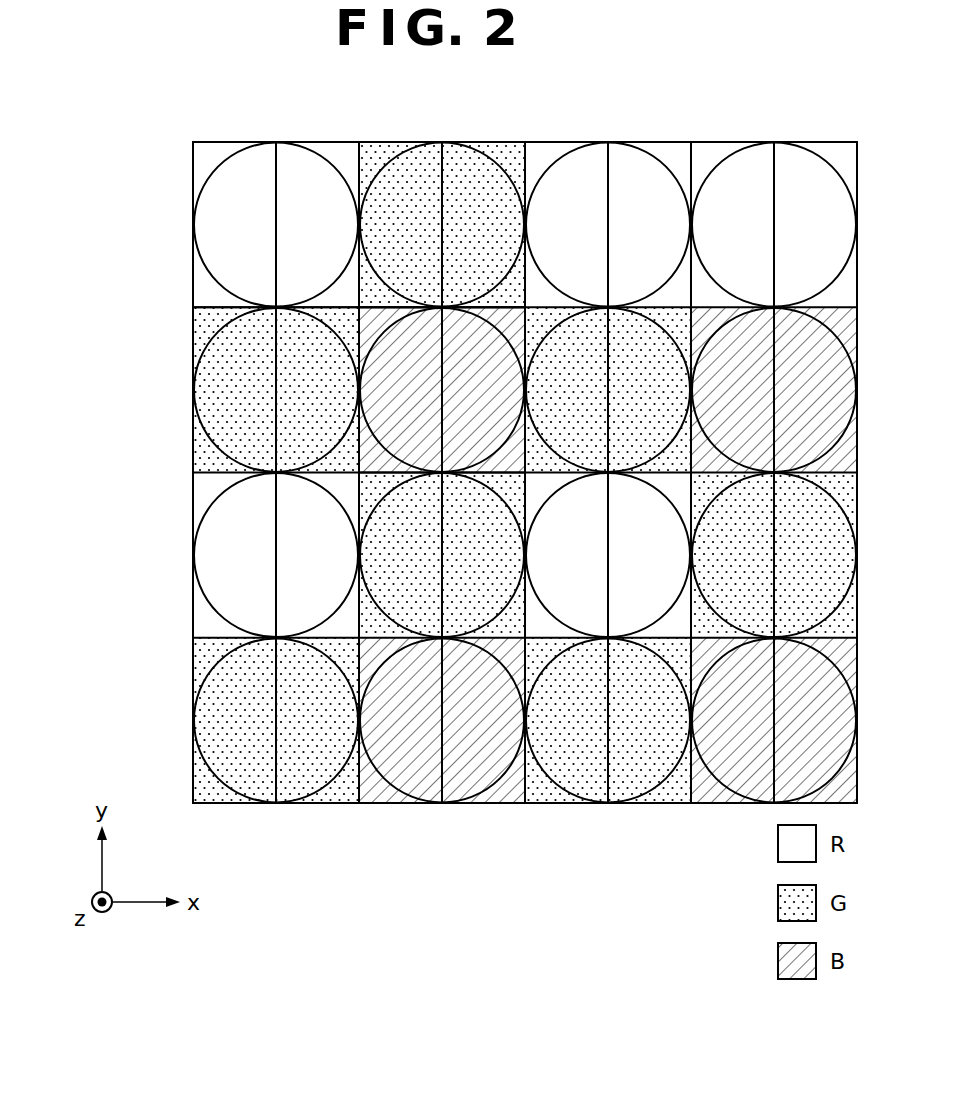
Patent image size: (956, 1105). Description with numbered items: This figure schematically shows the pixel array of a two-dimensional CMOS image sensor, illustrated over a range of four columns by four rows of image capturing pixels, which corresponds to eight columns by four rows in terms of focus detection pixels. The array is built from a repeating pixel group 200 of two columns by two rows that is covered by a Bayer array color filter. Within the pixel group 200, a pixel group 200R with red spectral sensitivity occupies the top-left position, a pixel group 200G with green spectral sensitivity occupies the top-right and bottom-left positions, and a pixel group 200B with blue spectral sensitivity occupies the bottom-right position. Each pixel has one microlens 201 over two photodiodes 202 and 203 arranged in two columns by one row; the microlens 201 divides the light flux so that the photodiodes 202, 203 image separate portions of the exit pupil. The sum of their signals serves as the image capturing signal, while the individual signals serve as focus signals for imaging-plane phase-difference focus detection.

The pixel group 200 is at (86, 210).
The pixel group having R spectral sensitivity 200R is at (206, 228).
The pixel group having G spectral sensitivity 200G is at (214, 348).
The pixel group having B spectral sensitivity 200B is at (382, 404).
The microlens 201 is at (232, 155).
The photodiode 202 is at (738, 170).
The photodiode 203 is at (794, 172).